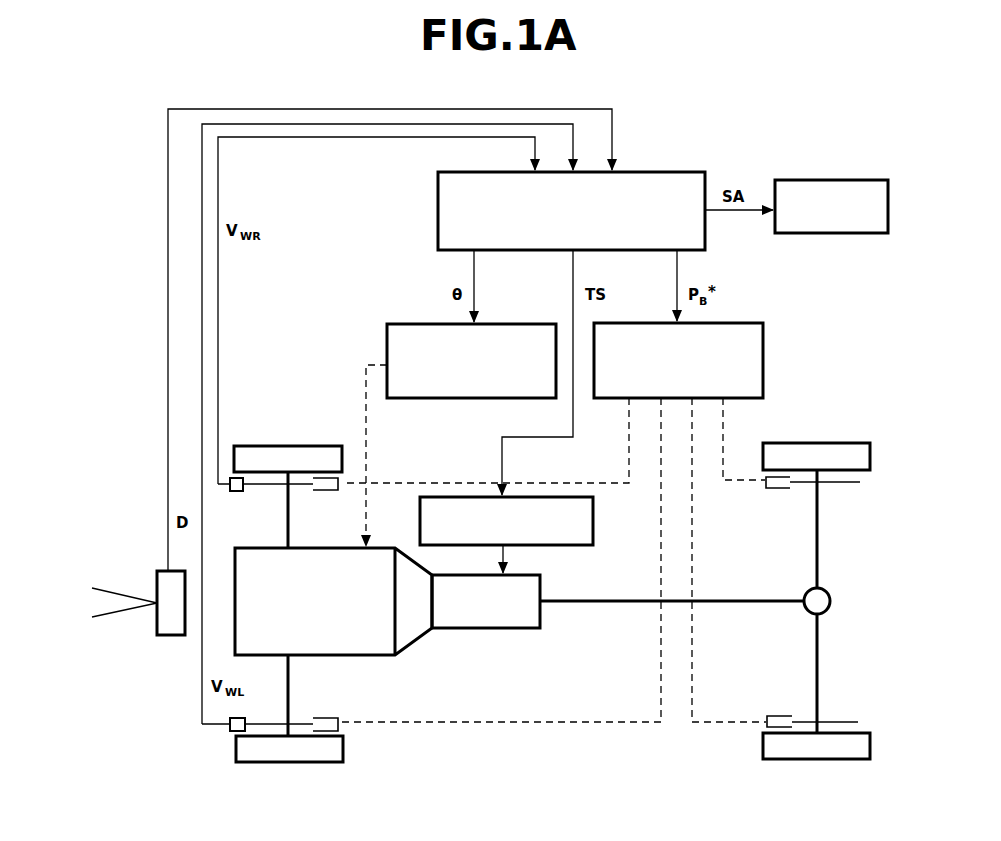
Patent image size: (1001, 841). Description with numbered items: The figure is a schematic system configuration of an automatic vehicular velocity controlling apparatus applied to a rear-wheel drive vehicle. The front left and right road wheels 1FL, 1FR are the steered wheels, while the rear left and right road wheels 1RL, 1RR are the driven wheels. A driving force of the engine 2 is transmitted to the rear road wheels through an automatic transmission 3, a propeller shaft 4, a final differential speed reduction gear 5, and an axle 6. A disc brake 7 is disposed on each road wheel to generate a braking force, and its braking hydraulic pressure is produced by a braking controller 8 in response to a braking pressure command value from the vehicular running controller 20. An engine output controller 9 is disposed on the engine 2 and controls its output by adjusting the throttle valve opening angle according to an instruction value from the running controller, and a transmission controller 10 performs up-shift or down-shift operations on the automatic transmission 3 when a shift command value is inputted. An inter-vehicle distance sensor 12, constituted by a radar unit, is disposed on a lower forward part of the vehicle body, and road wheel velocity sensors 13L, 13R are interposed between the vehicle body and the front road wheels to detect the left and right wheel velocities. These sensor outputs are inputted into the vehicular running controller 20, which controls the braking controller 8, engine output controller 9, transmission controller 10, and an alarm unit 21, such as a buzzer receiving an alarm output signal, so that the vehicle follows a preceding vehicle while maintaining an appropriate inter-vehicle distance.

The vehicular running controller 20 is at (438, 206).
The alarm unit 21 is at (832, 180).
The engine output controller 9 is at (387, 339).
The braking controller 8 is at (763, 346).
The transmission controller 10 is at (562, 545).
The engine 2 is at (375, 657).
The automatic transmission 3 is at (497, 628).
The propeller shaft 4 is at (726, 600).
The final differential gear 5 is at (830, 601).
The axle 6 is at (818, 568).
The disc brake 7 is at (302, 491).
The inter-vehicle distance sensor 12 is at (170, 635).
The road wheel velocity sensor 13R is at (243, 491).
The road wheel velocity sensor 13L is at (230, 731).
The front right road wheel 1FR is at (258, 446).
The front left road wheel 1FL is at (332, 762).
The rear right road wheel 1RR is at (822, 443).
The rear left road wheel 1RL is at (818, 759).